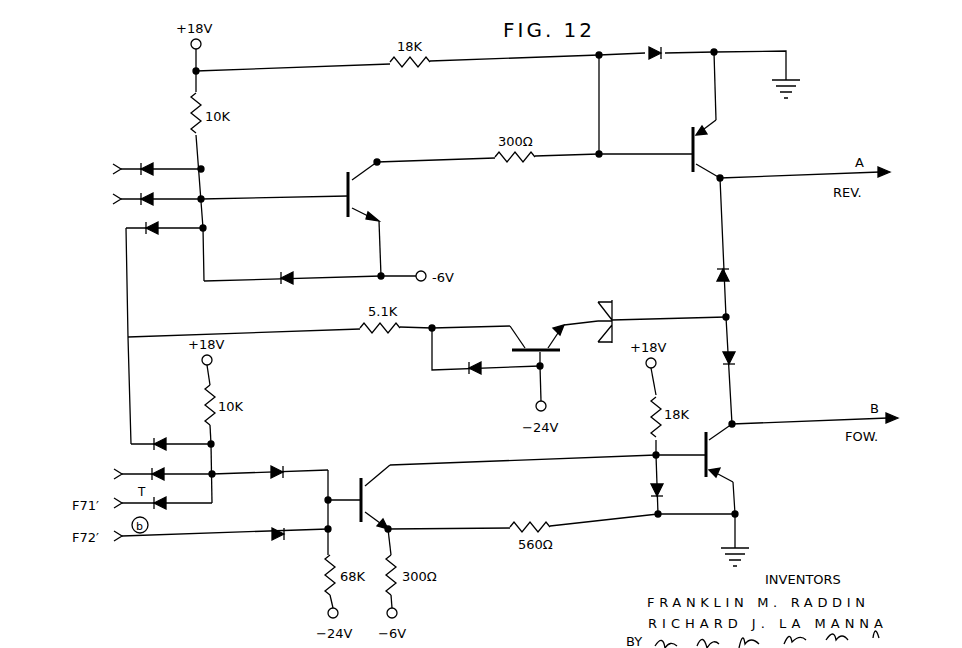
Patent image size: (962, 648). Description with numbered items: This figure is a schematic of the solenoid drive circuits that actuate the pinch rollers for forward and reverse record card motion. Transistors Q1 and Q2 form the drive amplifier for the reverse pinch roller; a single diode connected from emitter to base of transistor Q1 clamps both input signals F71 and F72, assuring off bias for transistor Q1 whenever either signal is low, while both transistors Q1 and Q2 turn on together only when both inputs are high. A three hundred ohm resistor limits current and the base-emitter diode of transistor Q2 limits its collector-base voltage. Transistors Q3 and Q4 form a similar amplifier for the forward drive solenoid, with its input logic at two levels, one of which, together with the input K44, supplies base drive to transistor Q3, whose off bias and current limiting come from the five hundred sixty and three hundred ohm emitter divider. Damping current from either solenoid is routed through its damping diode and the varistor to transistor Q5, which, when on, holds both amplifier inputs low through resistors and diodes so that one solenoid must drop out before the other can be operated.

The transistor Q1 is at (363, 191).
The transistor Q2 is at (709, 149).
The transistor Q3 is at (376, 497).
The transistor Q4 is at (722, 453).
The transistor Q5 is at (537, 342).
The signal F72 is at (131, 167).
The signal F71 is at (131, 195).
The input signal K44 is at (142, 470).